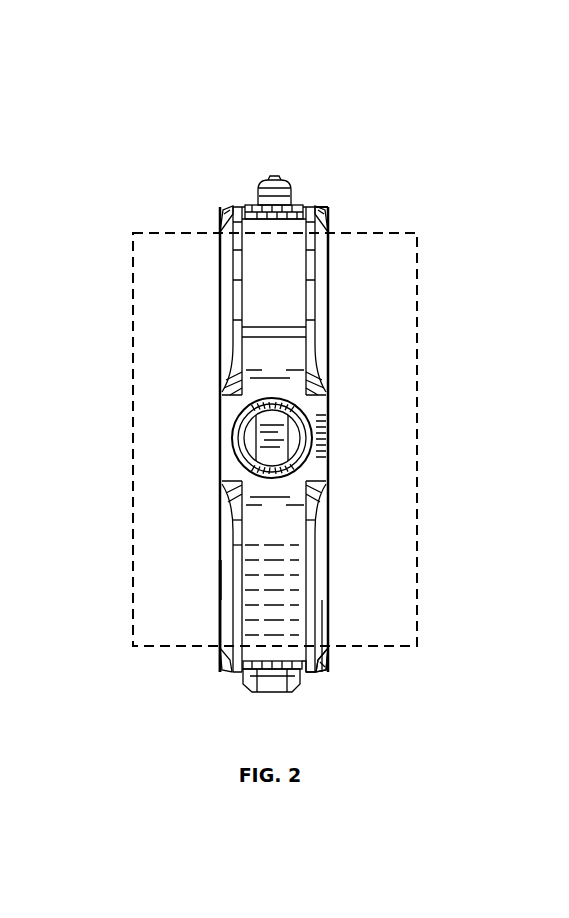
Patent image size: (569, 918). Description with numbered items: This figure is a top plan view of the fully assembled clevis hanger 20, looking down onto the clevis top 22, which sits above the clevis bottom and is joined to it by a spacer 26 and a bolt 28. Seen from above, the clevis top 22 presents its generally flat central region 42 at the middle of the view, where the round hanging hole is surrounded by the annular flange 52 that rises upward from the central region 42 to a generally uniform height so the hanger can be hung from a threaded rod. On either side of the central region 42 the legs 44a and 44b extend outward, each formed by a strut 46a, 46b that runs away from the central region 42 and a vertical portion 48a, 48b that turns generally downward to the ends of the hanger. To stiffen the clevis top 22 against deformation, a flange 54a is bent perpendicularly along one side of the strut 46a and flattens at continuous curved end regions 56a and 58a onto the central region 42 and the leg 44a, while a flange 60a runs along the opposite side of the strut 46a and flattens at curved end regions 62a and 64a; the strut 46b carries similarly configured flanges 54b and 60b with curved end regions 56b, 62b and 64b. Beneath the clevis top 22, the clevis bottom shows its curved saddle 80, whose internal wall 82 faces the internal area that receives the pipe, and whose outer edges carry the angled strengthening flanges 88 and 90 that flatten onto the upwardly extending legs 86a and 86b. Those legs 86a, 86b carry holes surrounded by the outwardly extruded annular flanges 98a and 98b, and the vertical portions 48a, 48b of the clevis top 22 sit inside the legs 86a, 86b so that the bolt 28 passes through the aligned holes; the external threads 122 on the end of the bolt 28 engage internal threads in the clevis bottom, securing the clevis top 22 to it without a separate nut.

The clevis hanger 20 is at (140, 113).
The clevis top 22 is at (193, 383).
The spacer 26 is at (250, 435).
The bolt 28 is at (262, 181).
The central region 42 is at (292, 440).
The leg 44a is at (222, 247).
The leg 44b is at (225, 592).
The strut 46a is at (216, 278).
The strut 46b is at (220, 628).
The vertical portion 48a is at (250, 205).
The vertical portion 48b is at (245, 667).
The annular flange 52 is at (240, 497).
The flange 54a is at (233, 318).
The flange 54b is at (237, 548).
The curved end region 56a is at (231, 373).
The curved end region 56b is at (238, 525).
The curved end region 58a is at (226, 205).
The flange 60a is at (310, 313).
The flange 60b is at (310, 533).
The curved end region 62a is at (313, 367).
The curved end region 62b is at (307, 502).
The curved end region 64a is at (320, 207).
The curved end region 64b is at (322, 670).
The saddle 80 is at (340, 265).
The internal wall 82 is at (320, 618).
The leg 86a is at (303, 203).
The leg 86b is at (308, 672).
The flange 88 is at (222, 562).
The flange 90 is at (328, 562).
The annular flange 98a is at (300, 205).
The annular flange 98b is at (243, 676).
The external threads 122 is at (289, 196).